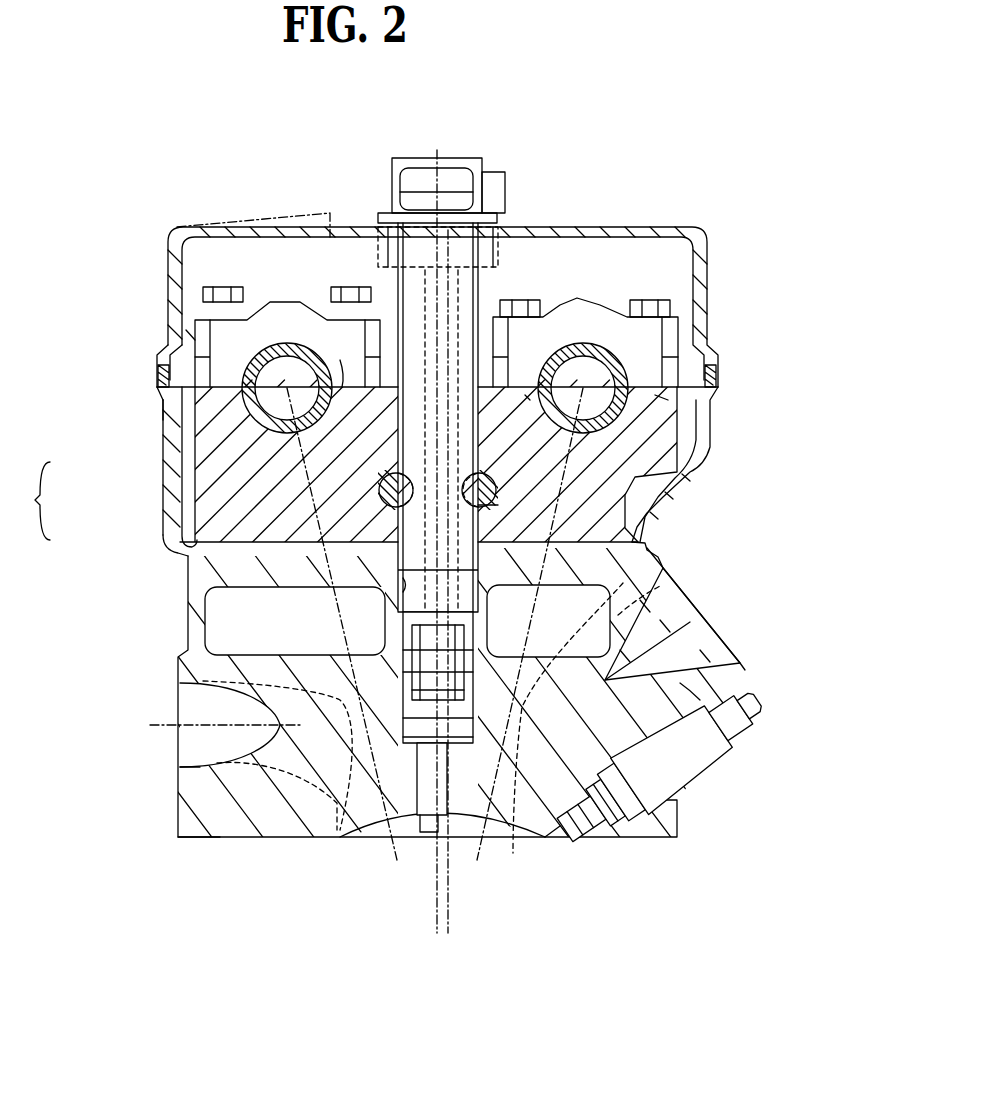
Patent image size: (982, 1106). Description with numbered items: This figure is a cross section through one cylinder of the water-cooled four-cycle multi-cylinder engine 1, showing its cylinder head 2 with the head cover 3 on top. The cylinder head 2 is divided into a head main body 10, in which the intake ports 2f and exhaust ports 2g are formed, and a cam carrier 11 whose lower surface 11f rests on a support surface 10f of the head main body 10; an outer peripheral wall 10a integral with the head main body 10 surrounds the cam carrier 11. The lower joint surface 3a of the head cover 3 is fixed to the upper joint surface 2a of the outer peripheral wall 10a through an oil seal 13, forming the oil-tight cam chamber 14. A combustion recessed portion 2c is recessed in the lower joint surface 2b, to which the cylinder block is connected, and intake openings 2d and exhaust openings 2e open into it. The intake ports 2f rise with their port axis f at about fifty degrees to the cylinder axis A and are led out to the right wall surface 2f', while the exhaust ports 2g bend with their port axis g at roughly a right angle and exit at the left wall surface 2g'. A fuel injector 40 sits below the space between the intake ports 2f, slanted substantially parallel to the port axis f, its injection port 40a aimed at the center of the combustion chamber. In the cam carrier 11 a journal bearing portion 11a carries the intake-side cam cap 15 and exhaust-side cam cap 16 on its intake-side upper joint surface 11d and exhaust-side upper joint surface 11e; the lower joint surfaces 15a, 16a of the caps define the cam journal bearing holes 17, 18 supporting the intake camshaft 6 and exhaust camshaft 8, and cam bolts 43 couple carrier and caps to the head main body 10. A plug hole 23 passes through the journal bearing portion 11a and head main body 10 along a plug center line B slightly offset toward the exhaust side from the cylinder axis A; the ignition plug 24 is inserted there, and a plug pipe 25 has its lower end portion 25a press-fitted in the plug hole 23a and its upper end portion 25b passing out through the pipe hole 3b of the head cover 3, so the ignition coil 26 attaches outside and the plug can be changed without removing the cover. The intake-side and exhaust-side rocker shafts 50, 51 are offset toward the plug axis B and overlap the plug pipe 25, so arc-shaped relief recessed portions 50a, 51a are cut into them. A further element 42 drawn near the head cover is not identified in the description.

The engine 1 is at (717, 163).
The cylinder head 2 is at (32, 501).
The upper joint surface 2a is at (162, 391).
The lower joint surface 2b is at (195, 840).
The combustion recessed portion 2c is at (366, 830).
The intake opening 2d is at (488, 855).
The exhaust opening 2e is at (352, 840).
The intake port 2f is at (642, 718).
The right wall surface 2f' is at (744, 668).
The exhaust port 2g is at (277, 793).
The left wall surface 2g' is at (143, 788).
The head cover 3 is at (160, 288).
The lower joint surface 3a is at (157, 378).
The pipe hole 3b is at (402, 240).
The intake camshaft 6 is at (692, 444).
The exhaust camshaft 8 is at (243, 408).
The head main body 10 is at (186, 598).
The outer peripheral wall 10a is at (700, 478).
The support surface 10f is at (281, 546).
The cam carrier 11 is at (191, 472).
The journal bearing portion 11a is at (683, 419).
The intake-side upper joint surface 11d is at (525, 392).
The exhaust-side upper joint surface 11e is at (337, 359).
The lower surface 11f is at (180, 542).
The oil seal 13 is at (722, 374).
The cam chamber 14 is at (690, 262).
The intake-side cam cap 15 is at (608, 304).
The lower joint surface 15a is at (660, 398).
The exhaust-side cam cap 16 is at (285, 302).
The lower joint surface 16a is at (188, 338).
The intake-side cam journal bearing hole 17 is at (581, 342).
The exhaust-side cam journal bearing hole 18 is at (293, 355).
The plug hole 23 is at (417, 400).
The plug hole 23a is at (403, 583).
The ignition plug 24 is at (405, 690).
The plug pipe 25 is at (481, 292).
The lower end portion 25a is at (490, 507).
The upper end portion 25b is at (497, 237).
The ignition coil 26 is at (399, 157).
The fuel injector 40 is at (702, 783).
The injection port 40a is at (549, 838).
The cover rib 42 is at (294, 212).
The cam bolt 43 is at (344, 290).
The intake-side rocker shaft 50 is at (498, 490).
The relief recessed portion 50a is at (460, 467).
The exhaust-side rocker shaft 51 is at (376, 500).
The relief recessed portion 51a is at (408, 477).
The port axis f is at (683, 616).
The port axis g is at (172, 722).
The cylinder axis A is at (449, 916).
The plug center line B is at (436, 896).